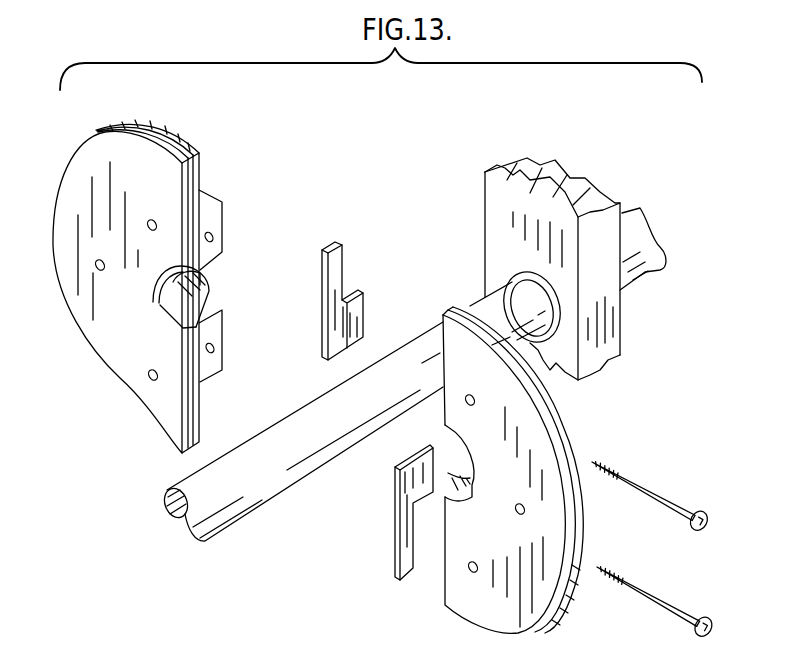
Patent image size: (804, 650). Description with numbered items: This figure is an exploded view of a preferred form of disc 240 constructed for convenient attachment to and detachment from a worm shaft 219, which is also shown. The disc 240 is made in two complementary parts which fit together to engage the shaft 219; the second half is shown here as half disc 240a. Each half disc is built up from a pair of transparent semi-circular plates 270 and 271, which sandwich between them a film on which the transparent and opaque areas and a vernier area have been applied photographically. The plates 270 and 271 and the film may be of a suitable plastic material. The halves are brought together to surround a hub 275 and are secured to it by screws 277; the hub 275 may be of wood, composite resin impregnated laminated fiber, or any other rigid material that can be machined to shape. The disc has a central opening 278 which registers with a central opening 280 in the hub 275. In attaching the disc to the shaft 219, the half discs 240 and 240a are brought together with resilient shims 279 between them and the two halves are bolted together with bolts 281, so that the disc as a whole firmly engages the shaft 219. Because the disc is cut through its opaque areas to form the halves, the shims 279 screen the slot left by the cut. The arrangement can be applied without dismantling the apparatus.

The worm shaft 219 is at (277, 485).
The disc 240 is at (98, 390).
The side plate 240a is at (562, 425).
The transparent semi-circular plate 270 is at (156, 417).
The transparent semi-circular plate 271 is at (202, 415).
The hub 275 is at (217, 222).
The screws 277 is at (152, 219).
The central opening 278 is at (173, 325).
The resilient shims 279 is at (365, 307).
The central opening 280 is at (207, 298).
The bolts 281 is at (655, 502).